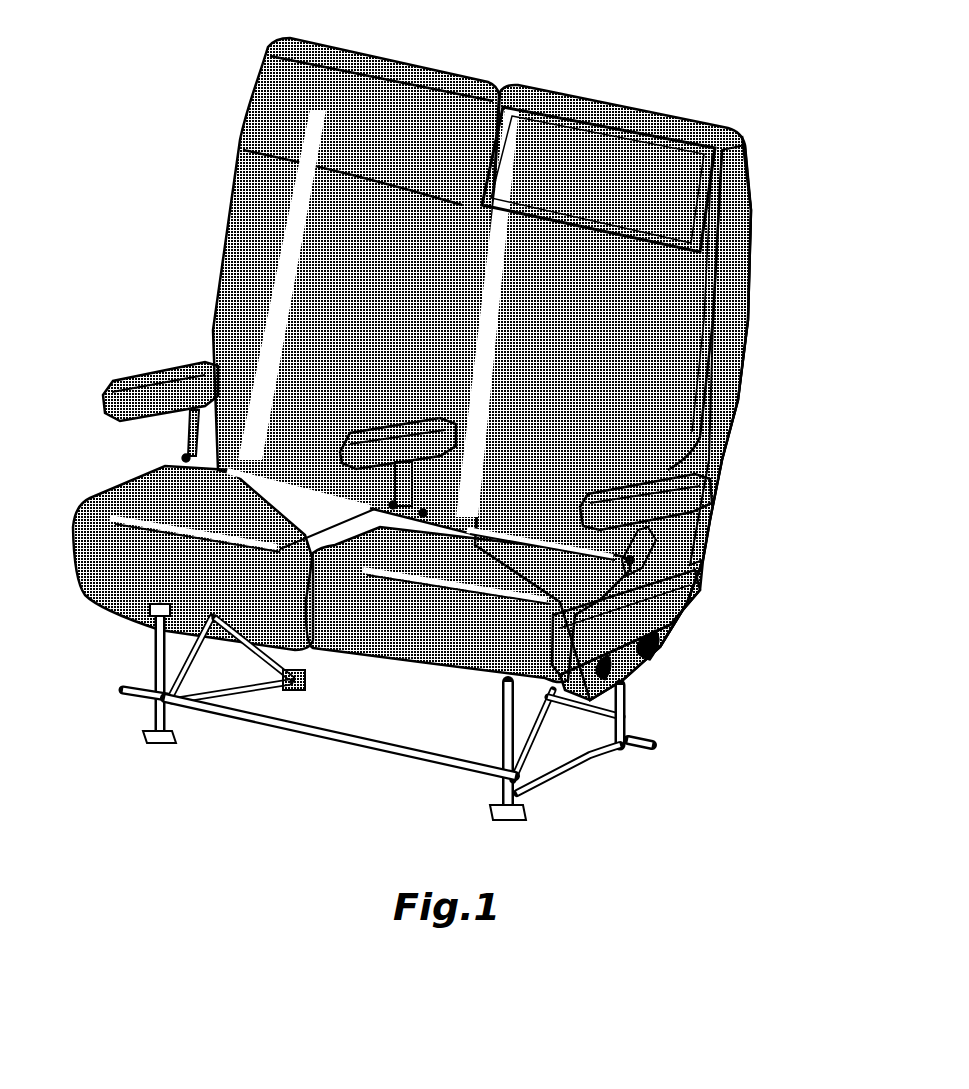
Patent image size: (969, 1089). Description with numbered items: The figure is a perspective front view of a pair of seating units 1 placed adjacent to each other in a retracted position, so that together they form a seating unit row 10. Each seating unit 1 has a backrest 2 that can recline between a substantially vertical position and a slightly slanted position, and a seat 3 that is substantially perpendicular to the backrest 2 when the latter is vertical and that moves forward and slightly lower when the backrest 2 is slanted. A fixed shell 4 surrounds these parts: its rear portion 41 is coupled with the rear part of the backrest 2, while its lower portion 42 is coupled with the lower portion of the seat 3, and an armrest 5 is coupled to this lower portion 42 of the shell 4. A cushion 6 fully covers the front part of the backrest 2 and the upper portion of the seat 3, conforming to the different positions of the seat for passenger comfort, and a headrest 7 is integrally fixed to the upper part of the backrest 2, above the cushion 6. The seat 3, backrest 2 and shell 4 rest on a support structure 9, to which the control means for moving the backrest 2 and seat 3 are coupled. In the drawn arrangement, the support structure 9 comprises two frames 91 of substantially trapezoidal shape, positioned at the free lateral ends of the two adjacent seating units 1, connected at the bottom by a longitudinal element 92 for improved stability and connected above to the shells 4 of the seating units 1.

The seating unit 1 is at (186, 75).
The seating unit row 10 is at (124, 217).
The backrest 2 is at (716, 268).
The seat 3 is at (672, 596).
The fixed shell 4 is at (727, 445).
The rear portion 41 is at (750, 320).
The lower portion 42 is at (658, 646).
The armrest 5 is at (712, 500).
The cushion 6 is at (700, 370).
The headrest 7 is at (690, 187).
The support structure 9 is at (638, 705).
The frames 91 is at (155, 650).
The longitudinal element 92 is at (350, 745).